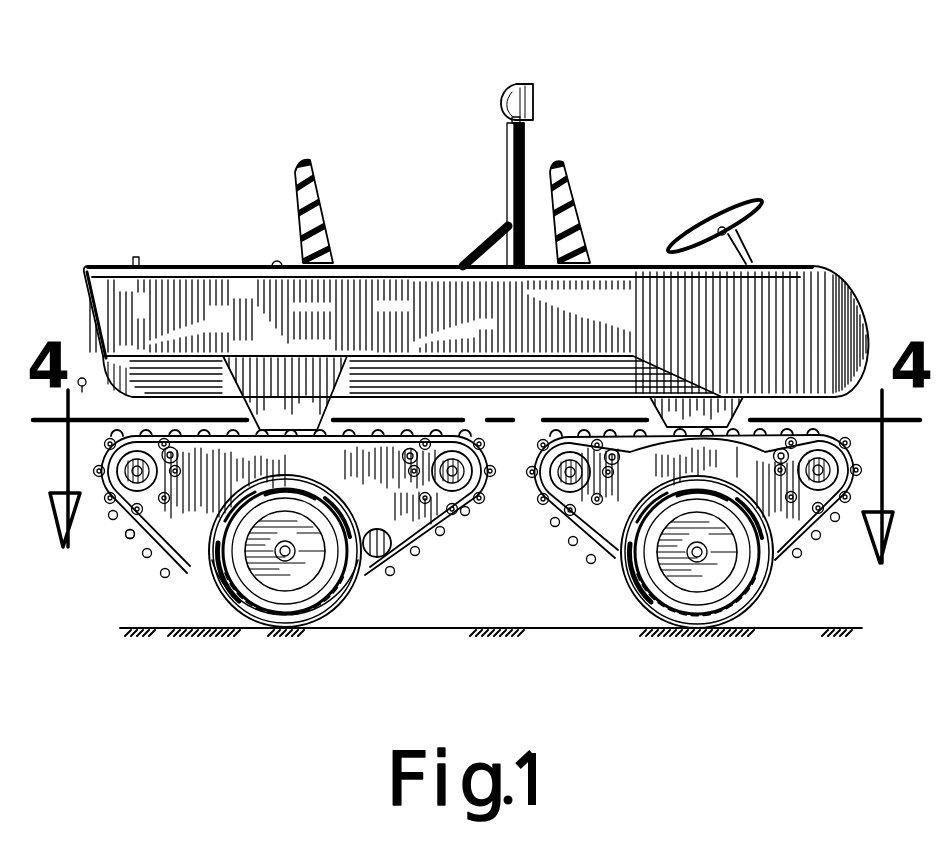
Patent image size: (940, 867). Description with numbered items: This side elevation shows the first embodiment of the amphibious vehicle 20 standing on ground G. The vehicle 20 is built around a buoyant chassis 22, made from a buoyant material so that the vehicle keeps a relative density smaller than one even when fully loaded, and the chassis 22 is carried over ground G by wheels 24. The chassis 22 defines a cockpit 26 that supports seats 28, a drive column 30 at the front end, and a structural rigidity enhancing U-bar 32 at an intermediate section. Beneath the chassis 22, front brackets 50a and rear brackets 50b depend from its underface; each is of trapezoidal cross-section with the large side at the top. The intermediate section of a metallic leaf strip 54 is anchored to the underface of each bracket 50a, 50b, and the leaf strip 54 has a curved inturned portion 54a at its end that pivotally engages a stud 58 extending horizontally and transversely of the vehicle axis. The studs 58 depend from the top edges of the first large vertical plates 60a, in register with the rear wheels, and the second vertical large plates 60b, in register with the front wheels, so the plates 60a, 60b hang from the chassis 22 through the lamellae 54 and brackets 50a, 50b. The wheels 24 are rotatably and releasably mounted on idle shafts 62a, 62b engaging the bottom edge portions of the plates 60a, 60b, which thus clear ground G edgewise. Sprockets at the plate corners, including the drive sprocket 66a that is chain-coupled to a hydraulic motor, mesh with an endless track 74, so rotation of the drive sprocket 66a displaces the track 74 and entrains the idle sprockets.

The vehicle 20 is at (453, 356).
The buoyant chassis 22 is at (135, 407).
The wheels 24 is at (310, 619).
The cockpit 26 is at (213, 263).
The seats 28 is at (320, 238).
The drive column 30 is at (714, 228).
The U-bar 32 is at (506, 206).
The front brackets 50a is at (657, 416).
The rear brackets 50b is at (273, 404).
The metallic leaf strip 54 is at (185, 458).
The curved inturned portion 54a is at (140, 507).
The studs 58 is at (470, 440).
The first large vertical plates 60a is at (163, 543).
The second vertical large plates 60b is at (573, 540).
The idle shaft 62a is at (283, 554).
The idle shaft 62b is at (694, 555).
The drive sprocket 66a is at (457, 517).
The endless track 74 is at (793, 543).
The ground G is at (773, 623).